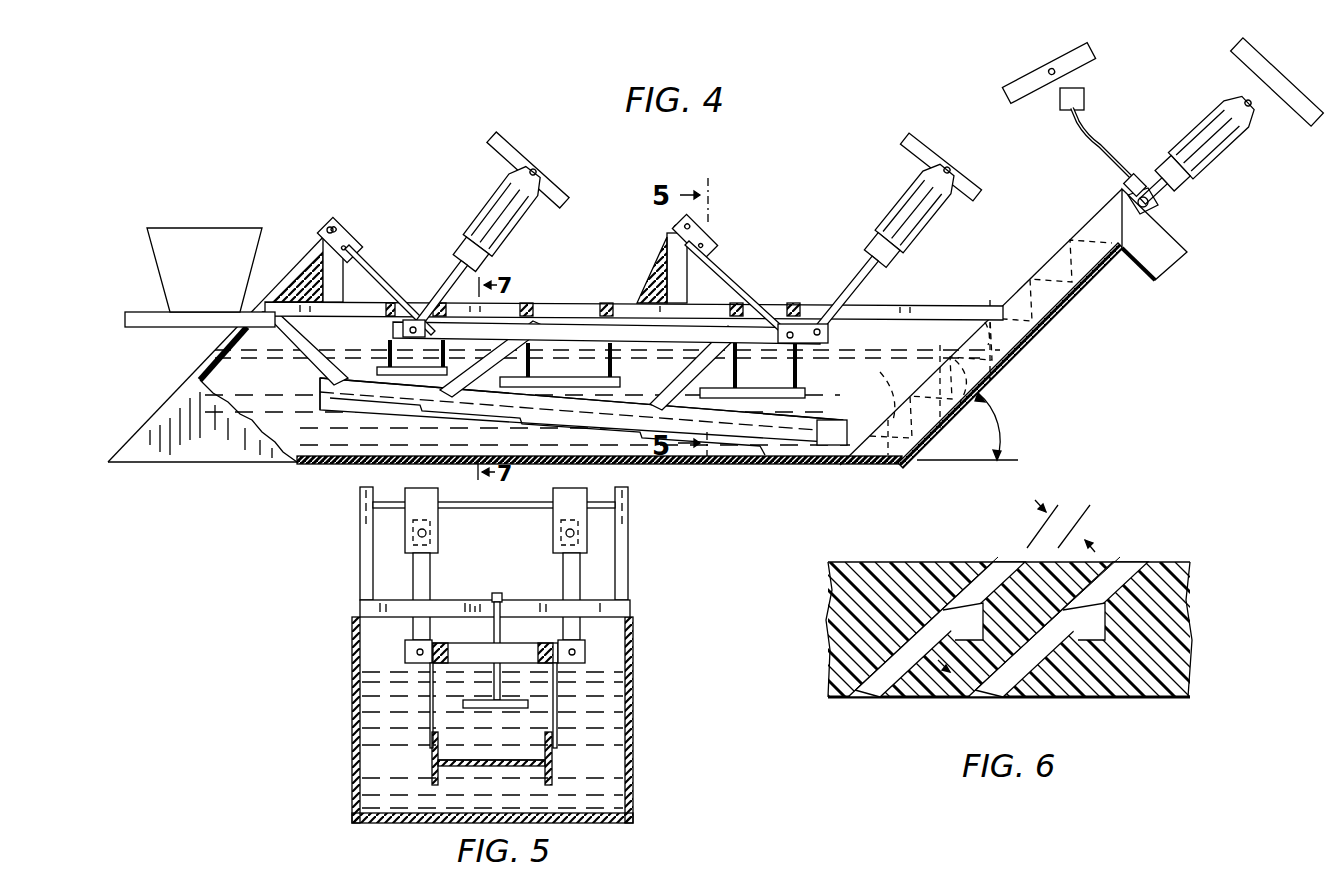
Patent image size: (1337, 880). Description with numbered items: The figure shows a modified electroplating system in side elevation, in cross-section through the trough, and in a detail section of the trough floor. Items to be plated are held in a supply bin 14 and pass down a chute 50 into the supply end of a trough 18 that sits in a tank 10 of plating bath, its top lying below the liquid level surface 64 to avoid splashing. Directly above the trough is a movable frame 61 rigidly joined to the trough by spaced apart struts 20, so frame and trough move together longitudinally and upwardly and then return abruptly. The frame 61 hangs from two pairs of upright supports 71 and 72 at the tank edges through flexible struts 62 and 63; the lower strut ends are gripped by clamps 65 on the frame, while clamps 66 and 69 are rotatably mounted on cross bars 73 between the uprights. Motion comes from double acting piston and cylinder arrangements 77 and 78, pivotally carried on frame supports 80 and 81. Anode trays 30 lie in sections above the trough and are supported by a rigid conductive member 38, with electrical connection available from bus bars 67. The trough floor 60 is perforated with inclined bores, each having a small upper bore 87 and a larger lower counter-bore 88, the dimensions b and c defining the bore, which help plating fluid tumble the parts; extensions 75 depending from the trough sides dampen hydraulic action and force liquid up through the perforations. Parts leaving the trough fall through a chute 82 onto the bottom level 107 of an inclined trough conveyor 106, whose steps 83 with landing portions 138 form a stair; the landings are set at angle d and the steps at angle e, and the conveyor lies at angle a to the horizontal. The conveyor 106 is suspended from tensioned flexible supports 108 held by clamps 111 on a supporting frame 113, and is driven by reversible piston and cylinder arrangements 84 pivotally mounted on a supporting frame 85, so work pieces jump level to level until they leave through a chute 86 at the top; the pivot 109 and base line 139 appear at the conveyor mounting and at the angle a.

In FIG. 4, the tank 10 is at (165, 420).
In FIG. 4, the supply bin 14 is at (160, 266).
In FIG. 4, the trough 18 is at (320, 400).
In FIG. 5, the trough 18 is at (435, 762).
In FIG. 4, the struts 20 is at (520, 325).
In FIG. 5, the struts 20 is at (430, 727).
In FIG. 4, the anode trays 30 is at (385, 368).
In FIG. 5, the anode trays 30 is at (488, 700).
In FIG. 4, the rigid conductive member 38 is at (600, 345).
In FIG. 5, the rigid conductive member 38 is at (500, 633).
In FIG. 4, the chute 50 is at (320, 338).
In FIG. 4, the trough floor 60 is at (540, 412).
In FIG. 5, the trough floor 60 is at (488, 760).
In FIG. 6, the trough floor 60 is at (908, 562).
In FIG. 4, the movable frame 61 is at (640, 335).
In FIG. 5, the movable frame 61 is at (474, 633).
In FIG. 4, the flexible struts 62 is at (363, 262).
In FIG. 4, the flexible struts 63 is at (728, 278).
In FIG. 5, the flexible struts 63 is at (430, 570).
In FIG. 4, the liquid level surface 64 is at (225, 335).
In FIG. 5, the liquid level surface 64 is at (622, 668).
In FIG. 4, the clamps 65 is at (424, 322).
In FIG. 5, the clamps 65 is at (405, 648).
In FIG. 4, the clamps 66 is at (360, 243).
In FIG. 4, the bus bars 67 is at (608, 302).
In FIG. 5, the bus bars 67 is at (468, 603).
In FIG. 4, the clamps 69 is at (712, 232).
In FIG. 5, the clamps 69 is at (440, 520).
In FIG. 4, the upright supports 71 is at (652, 255).
In FIG. 5, the upright supports 71 is at (360, 562).
In FIG. 4, the upright supports 72 is at (312, 268).
In FIG. 4, the cross bars 73 is at (333, 228).
In FIG. 5, the cross bars 73 is at (598, 503).
In FIG. 4, the extensions 75 is at (763, 445).
In FIG. 5, the extensions 75 is at (434, 782).
In FIG. 4, the double acting piston and cylinder arrangement 77 is at (505, 230).
In FIG. 4, the double acting piston and cylinder arrangement 78 is at (885, 218).
In FIG. 4, the frame support 80 is at (930, 140).
In FIG. 4, the frame support 81 is at (550, 187).
In FIG. 4, the chute 82 is at (830, 442).
In FIG. 4, the steps 83 is at (1050, 265).
In FIG. 4, the reversible piston and cylinder arrangements 84 is at (1197, 130).
In FIG. 4, the supporting frame 85 is at (1272, 73).
In FIG. 4, the chute 86 is at (1155, 280).
In FIG. 6, the bore 87 is at (1010, 562).
In FIG. 6, the counter-bore 88 is at (878, 697).
In FIG. 4, the trough conveyor 106 is at (1078, 292).
In FIG. 4, the bottom level 107 is at (872, 462).
In FIG. 4, the flexible supports 108 is at (1100, 134).
In FIG. 4, the pivot 109 is at (1125, 182).
In FIG. 4, the clamps 111 is at (1085, 95).
In FIG. 4, the supporting frame 113 is at (1022, 75).
In FIG. 4, the landing portions 138 is at (880, 372).
In FIG. 4, the base line 139 is at (950, 428).
In FIG. 4, the angle a is at (994, 426).
In FIG. 6, the distance b is at (1061, 526).
In FIG. 6, the distance c is at (937, 658).
In FIG. 4, the angle d is at (955, 360).
In FIG. 4, the angle e is at (985, 320).